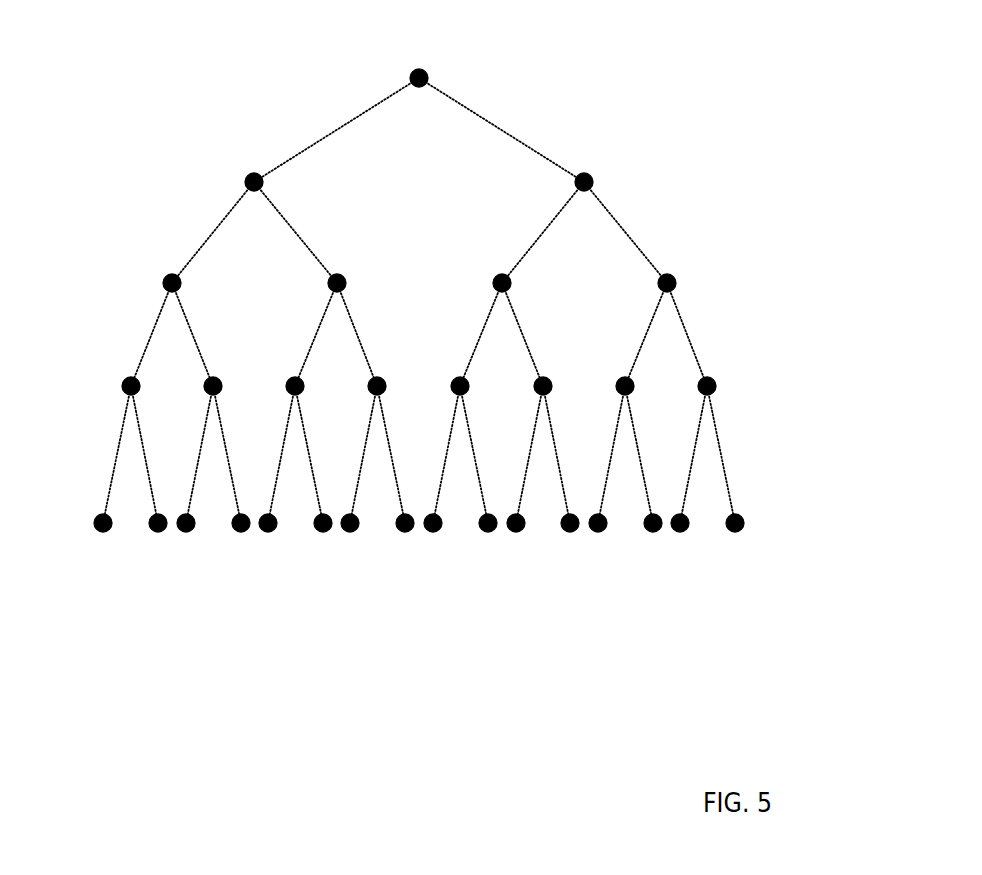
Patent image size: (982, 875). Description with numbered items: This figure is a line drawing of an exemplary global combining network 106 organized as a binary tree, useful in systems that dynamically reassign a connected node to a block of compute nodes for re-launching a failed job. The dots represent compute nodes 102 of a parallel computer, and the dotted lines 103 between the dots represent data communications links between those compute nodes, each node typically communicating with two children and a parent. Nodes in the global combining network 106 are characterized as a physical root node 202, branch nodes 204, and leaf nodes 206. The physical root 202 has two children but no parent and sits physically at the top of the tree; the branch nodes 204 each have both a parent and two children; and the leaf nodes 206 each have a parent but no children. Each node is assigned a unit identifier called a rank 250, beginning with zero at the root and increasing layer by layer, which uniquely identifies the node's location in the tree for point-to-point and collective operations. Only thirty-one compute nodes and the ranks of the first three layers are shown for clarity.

The global combining network 106 is at (449, 378).
The data communications links 103 is at (343, 125).
The compute nodes 102 is at (472, 378).
The physical root node 202 is at (541, 53).
The branch nodes 204 is at (757, 134).
The leaf nodes 206 is at (487, 531).
The rank 250 is at (548, 192).